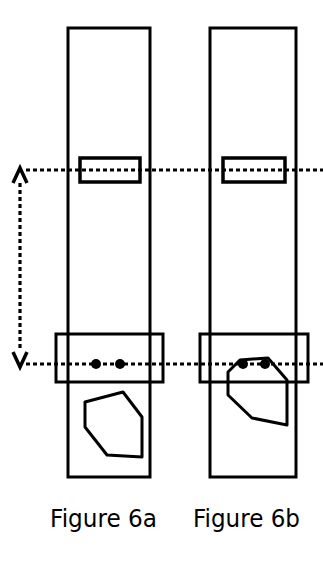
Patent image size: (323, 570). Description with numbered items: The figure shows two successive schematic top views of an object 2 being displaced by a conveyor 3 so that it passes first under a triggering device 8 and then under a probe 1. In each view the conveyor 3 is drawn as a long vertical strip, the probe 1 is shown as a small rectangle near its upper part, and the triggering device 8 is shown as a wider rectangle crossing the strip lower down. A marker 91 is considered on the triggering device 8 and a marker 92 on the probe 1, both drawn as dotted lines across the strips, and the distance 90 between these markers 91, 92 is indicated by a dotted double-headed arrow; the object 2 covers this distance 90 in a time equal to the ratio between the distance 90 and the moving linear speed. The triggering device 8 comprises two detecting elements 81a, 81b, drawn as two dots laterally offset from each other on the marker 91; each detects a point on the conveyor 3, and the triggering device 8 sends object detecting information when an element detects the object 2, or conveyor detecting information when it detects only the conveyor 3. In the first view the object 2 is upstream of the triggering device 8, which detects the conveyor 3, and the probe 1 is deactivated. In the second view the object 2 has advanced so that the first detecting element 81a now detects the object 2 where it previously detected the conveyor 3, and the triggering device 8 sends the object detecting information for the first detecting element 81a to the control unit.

The probe 1 is at (104, 157).
The object 2 is at (115, 428).
The conveyor 3 is at (147, 473).
The triggering device 8 is at (90, 384).
The first detecting element 81a is at (96, 364).
The second detecting element 81b is at (120, 364).
The distance 90 is at (21, 241).
The marker on the triggering device 91 is at (32, 363).
The marker on the probe 92 is at (44, 168).